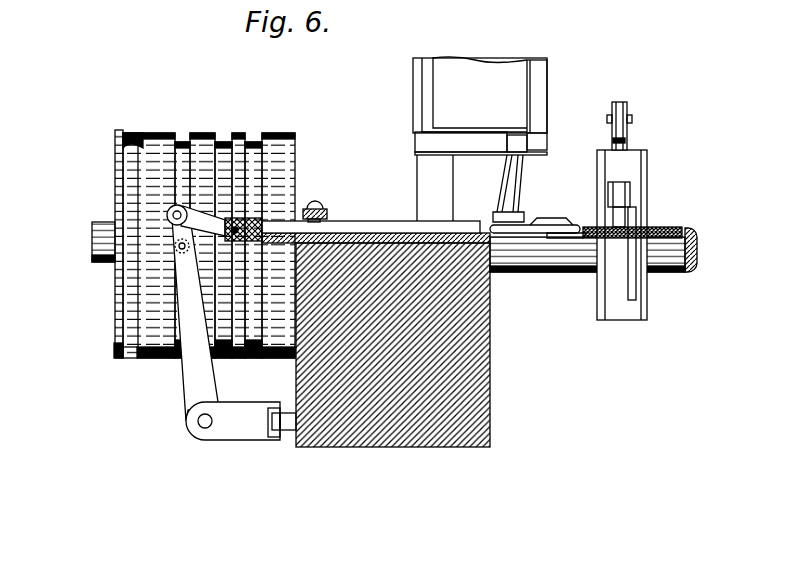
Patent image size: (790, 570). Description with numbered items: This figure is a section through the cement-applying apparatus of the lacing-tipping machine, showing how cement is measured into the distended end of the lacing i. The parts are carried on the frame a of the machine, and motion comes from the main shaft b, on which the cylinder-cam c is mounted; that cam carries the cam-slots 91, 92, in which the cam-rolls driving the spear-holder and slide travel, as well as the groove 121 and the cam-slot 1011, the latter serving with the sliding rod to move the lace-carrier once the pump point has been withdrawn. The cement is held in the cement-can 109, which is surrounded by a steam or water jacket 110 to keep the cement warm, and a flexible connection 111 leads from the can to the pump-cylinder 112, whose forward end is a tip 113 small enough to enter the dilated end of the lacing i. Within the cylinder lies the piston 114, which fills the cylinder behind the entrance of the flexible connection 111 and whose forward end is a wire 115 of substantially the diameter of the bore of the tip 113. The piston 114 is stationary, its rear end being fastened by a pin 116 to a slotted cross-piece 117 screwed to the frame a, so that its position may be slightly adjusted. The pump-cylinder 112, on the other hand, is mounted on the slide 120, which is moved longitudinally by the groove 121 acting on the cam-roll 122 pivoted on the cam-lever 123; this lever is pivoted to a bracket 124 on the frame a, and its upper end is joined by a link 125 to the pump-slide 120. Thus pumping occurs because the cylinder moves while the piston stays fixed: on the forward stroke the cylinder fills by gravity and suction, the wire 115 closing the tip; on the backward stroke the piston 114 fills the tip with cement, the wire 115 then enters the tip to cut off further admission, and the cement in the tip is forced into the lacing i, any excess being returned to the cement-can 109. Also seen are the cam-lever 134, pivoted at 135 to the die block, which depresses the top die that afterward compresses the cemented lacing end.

The cam-slot 1011 is at (131, 163).
The cylinder-cam c is at (116, 164).
The link 125 is at (208, 222).
The main shaft b is at (103, 234).
The cam-roll 122 is at (173, 254).
The groove 121 is at (181, 142).
The cam-slot 91 is at (222, 142).
The cam-slot 92 is at (250, 142).
The slide 120 is at (262, 232).
The pin 116 is at (309, 204).
The cross-piece 117 is at (327, 213).
The piston 114 is at (380, 221).
The cement-can 109 is at (480, 95).
The steam or water jacket 110 is at (542, 93).
The flexible connection 111 is at (514, 178).
The pump-cylinder 112 is at (544, 216).
The wire 115 is at (553, 240).
The tip 113 is at (582, 240).
The cam-lever 134 is at (621, 108).
The pivot 135 is at (619, 196).
The lacing i is at (651, 224).
The frame a is at (482, 378).
The cam-lever 123 is at (198, 386).
The bracket 124 is at (232, 424).